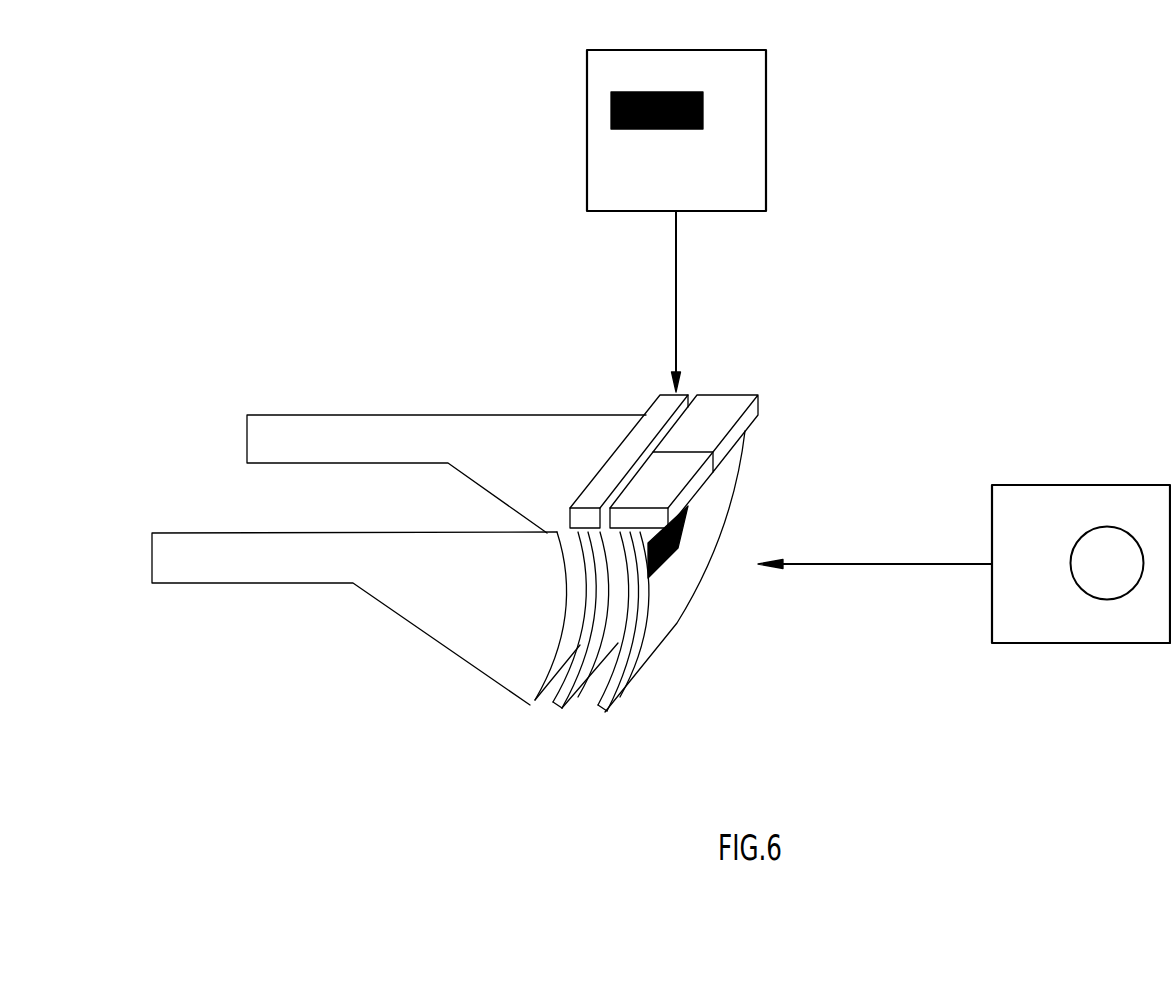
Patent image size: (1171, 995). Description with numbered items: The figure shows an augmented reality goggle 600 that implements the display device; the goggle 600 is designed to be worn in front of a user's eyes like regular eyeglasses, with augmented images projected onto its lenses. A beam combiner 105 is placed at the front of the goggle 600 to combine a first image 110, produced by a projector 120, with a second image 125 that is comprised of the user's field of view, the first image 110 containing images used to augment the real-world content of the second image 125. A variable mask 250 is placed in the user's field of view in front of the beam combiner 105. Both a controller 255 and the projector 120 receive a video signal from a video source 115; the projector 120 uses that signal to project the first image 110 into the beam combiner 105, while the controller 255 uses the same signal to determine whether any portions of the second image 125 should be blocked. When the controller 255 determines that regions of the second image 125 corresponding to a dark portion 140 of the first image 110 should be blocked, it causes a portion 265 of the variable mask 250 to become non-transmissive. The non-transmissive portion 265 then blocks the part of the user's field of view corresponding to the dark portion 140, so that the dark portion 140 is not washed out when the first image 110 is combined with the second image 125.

The first image 110 is at (766, 137).
The dark portion 140 is at (610, 110).
The projector 120 is at (678, 400).
The controller 255 is at (737, 407).
The video source 115 is at (677, 477).
The variable mask 250 is at (713, 502).
The non-transmissive portion 265 is at (660, 567).
The augmented reality goggle 600 is at (375, 412).
The beam combiner 105 is at (556, 710).
The second image 125 is at (1117, 645).